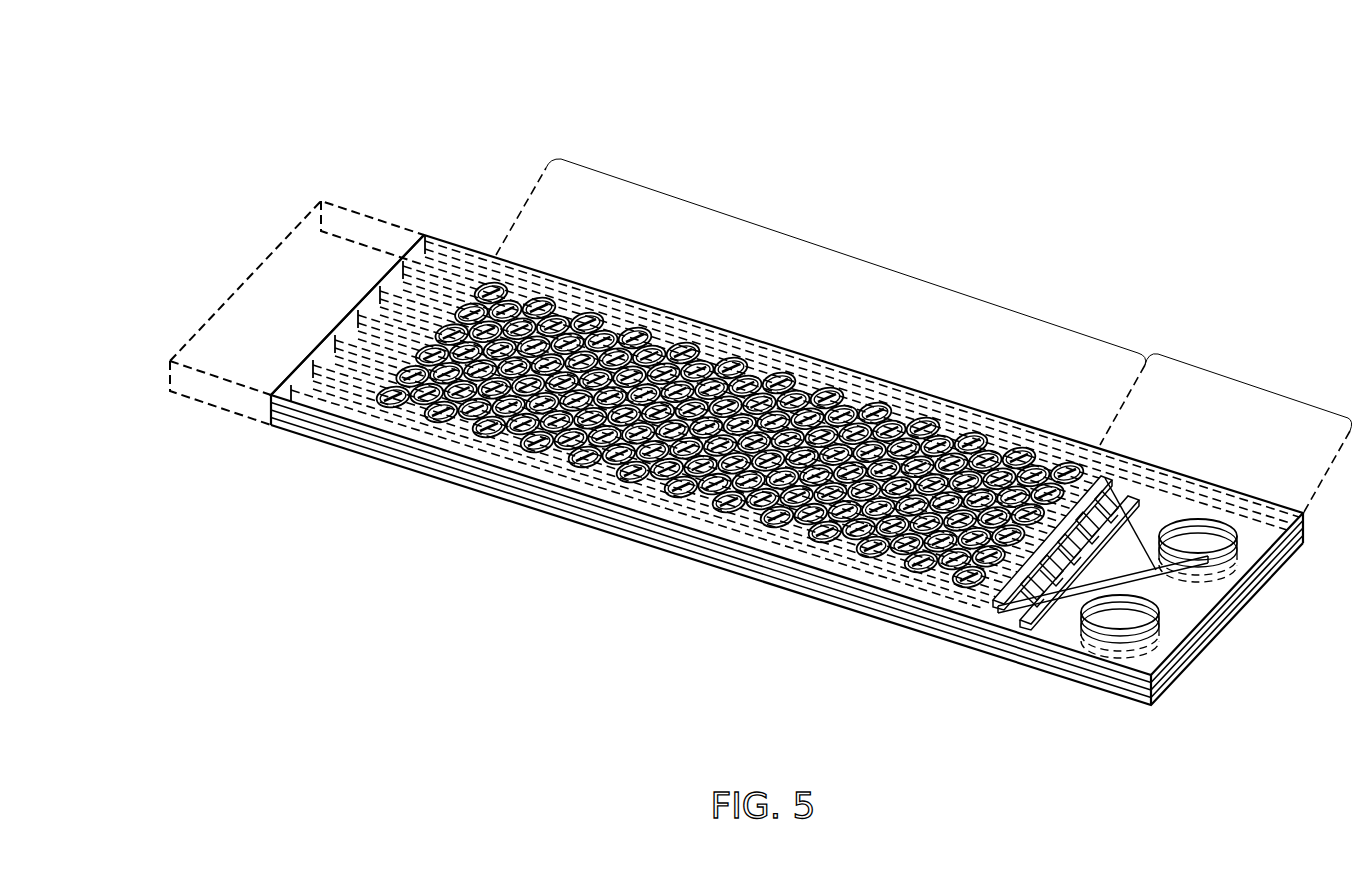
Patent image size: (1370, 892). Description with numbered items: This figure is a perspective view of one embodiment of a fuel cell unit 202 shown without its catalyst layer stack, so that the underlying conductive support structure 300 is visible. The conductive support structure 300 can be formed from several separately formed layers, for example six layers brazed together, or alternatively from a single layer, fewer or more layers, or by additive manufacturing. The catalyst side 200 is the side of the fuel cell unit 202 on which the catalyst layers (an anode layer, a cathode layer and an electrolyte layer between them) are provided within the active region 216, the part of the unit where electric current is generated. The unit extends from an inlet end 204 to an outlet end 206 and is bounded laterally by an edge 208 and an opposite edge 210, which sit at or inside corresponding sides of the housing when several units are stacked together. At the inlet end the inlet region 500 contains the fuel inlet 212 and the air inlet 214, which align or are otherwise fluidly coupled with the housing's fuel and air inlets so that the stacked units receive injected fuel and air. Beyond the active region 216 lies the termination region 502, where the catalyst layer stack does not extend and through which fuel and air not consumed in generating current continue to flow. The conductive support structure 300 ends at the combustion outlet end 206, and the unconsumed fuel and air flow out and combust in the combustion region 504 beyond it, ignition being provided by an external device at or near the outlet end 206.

The catalyst side 200 is at (685, 502).
The fuel cell unit 202 is at (306, 136).
The inlet end 204 is at (1213, 610).
The outlet end 206 is at (332, 310).
The edge 208 is at (612, 505).
The opposite edge 210 is at (818, 352).
The fuel inlet 212 is at (1112, 612).
The air inlet 214 is at (1183, 530).
The active region 216 is at (845, 246).
The conductive support structure 300 is at (1143, 697).
The inlet region 500 is at (1233, 370).
The termination region 502 is at (497, 230).
The combustion region 504 is at (243, 332).